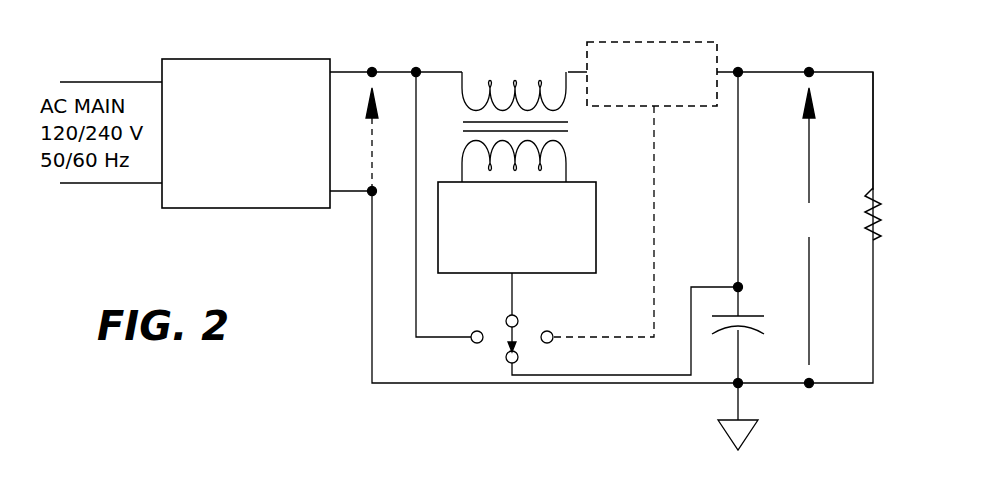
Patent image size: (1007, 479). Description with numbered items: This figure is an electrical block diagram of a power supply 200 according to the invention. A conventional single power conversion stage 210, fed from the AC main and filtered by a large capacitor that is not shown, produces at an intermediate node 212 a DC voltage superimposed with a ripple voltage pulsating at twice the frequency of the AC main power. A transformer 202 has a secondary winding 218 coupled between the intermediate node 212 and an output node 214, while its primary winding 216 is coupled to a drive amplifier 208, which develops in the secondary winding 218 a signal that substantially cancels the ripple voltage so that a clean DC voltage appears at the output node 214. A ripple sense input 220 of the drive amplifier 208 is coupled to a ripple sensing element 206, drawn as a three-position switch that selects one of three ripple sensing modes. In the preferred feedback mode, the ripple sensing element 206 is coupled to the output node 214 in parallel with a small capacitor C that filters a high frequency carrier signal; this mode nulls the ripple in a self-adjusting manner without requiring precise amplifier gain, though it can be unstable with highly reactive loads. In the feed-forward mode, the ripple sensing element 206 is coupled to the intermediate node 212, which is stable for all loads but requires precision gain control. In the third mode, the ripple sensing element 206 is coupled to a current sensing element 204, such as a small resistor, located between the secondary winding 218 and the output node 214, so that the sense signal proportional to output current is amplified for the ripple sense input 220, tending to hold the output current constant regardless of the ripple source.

The power supply 200 is at (322, 342).
The transformer 202 is at (570, 128).
The current sensing element 204 is at (660, 108).
The ripple sensing element 206 is at (516, 316).
The drive amplifier 208 is at (598, 212).
The single power conversion stage 210 is at (278, 59).
The intermediate node 212 is at (372, 70).
The output node 214 is at (810, 70).
The primary winding 216 is at (462, 160).
The secondary winding 218 is at (517, 90).
The ripple sense input 220 is at (510, 280).